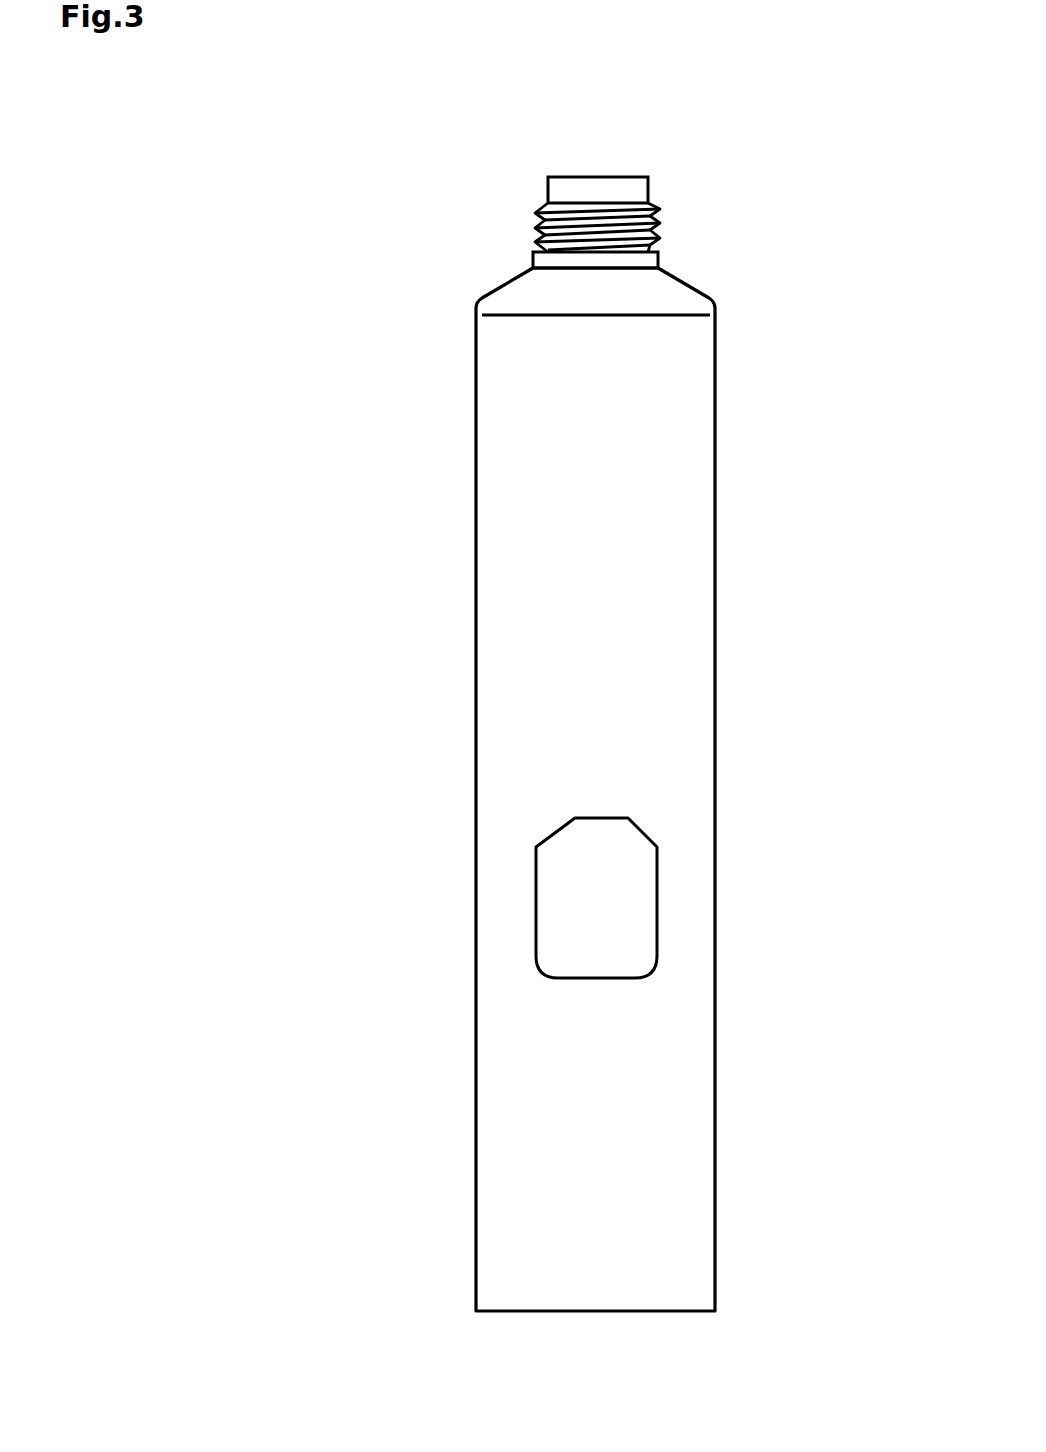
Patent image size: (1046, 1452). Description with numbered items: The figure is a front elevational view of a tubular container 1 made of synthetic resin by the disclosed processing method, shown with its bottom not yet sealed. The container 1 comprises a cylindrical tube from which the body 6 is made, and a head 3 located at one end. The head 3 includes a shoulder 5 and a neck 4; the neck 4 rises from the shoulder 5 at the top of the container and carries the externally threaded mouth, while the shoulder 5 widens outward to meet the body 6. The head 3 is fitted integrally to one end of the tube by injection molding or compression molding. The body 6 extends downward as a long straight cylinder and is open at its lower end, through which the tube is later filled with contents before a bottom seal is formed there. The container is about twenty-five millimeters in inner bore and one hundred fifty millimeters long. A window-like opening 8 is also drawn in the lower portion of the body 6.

The tubular container 1 is at (775, 299).
The head 3 is at (479, 210).
The neck 4 is at (565, 192).
The shoulder 5 is at (532, 286).
The body 6 is at (678, 612).
The window 8 is at (627, 905).